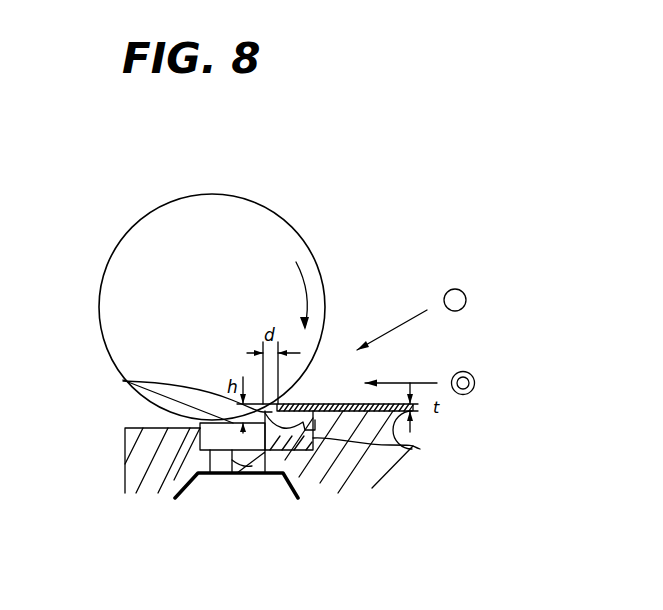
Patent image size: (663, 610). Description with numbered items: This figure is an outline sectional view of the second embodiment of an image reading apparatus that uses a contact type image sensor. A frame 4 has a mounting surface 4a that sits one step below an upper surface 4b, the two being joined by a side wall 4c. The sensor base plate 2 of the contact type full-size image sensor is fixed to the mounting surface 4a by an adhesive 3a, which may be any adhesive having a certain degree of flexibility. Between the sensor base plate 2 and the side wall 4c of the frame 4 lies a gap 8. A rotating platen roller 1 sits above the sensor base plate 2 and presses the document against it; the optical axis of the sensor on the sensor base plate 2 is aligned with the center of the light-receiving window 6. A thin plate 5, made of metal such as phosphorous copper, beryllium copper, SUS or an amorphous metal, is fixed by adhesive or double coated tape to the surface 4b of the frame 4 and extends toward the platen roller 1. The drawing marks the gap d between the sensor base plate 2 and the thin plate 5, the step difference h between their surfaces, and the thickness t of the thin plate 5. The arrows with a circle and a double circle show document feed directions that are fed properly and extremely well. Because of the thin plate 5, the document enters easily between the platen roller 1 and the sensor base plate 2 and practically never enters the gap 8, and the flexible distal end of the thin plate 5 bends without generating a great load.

The platen roller 1 is at (287, 234).
The sensor base plate 2 is at (123, 380).
The adhesive 3a is at (268, 423).
The frame 4 is at (133, 458).
The mounting surface 4a is at (303, 480).
The surface 4b is at (410, 448).
The side wall 4c is at (420, 449).
The thin plate 5 is at (331, 404).
The light-receiving window 6 is at (248, 477).
The gap 8 is at (286, 456).